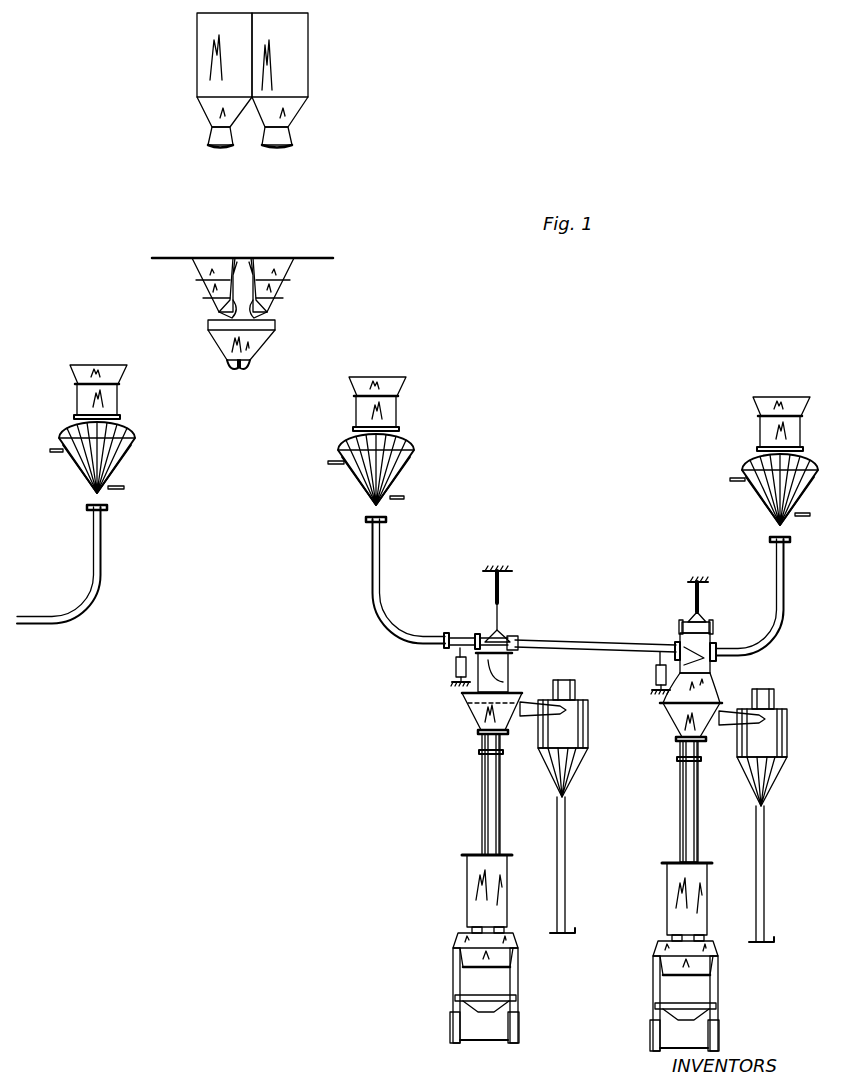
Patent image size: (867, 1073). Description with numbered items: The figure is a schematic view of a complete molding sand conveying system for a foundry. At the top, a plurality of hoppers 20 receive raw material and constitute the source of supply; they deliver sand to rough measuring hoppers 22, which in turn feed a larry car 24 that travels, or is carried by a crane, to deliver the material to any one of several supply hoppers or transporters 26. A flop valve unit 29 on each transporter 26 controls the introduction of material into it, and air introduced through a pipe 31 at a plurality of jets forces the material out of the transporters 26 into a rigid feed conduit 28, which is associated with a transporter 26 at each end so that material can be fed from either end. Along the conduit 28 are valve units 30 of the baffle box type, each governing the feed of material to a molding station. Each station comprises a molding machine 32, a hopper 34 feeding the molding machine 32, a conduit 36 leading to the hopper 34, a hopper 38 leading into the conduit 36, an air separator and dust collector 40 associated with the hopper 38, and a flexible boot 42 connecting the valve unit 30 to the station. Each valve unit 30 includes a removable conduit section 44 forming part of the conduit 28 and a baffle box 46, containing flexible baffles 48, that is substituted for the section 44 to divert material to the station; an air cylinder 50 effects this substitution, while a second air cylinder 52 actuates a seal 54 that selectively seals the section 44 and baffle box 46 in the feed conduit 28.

The hoppers 20 is at (197, 46).
The rough measuring hoppers 22 is at (215, 292).
The larry car 24 is at (222, 343).
The supply hoppers or transporters 26 is at (128, 458).
The feed conduit 28 is at (102, 545).
The flop valve unit 29 is at (118, 405).
The valve unit 30 is at (504, 633).
The pipe 31 is at (60, 452).
The molding machine 32 is at (455, 1025).
The hopper 34 is at (470, 883).
The conduit 36 is at (484, 797).
The hopper 38 is at (478, 720).
The air separator and dust collector 40 is at (572, 778).
The flexible boot 42 is at (470, 702).
The removable conduit section 44 is at (516, 638).
The baffle box 46 is at (505, 664).
The flexible baffles 48 is at (502, 678).
The motor unit or air cylinder 50 is at (495, 590).
The second motor unit or air cylinder 52 is at (455, 666).
The seal 54 is at (477, 636).